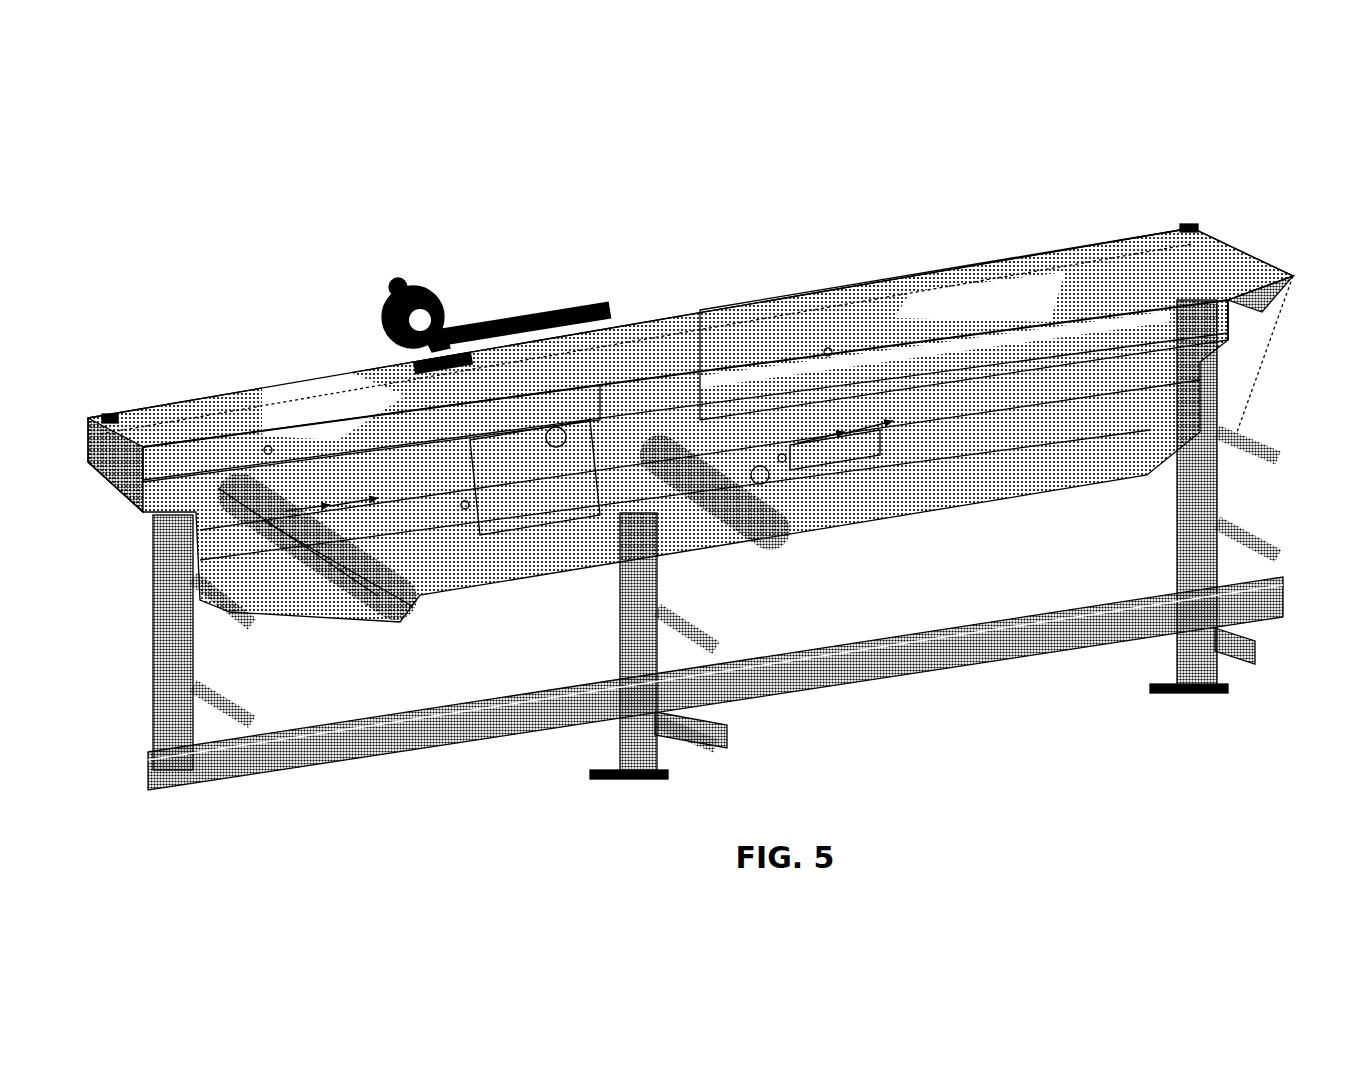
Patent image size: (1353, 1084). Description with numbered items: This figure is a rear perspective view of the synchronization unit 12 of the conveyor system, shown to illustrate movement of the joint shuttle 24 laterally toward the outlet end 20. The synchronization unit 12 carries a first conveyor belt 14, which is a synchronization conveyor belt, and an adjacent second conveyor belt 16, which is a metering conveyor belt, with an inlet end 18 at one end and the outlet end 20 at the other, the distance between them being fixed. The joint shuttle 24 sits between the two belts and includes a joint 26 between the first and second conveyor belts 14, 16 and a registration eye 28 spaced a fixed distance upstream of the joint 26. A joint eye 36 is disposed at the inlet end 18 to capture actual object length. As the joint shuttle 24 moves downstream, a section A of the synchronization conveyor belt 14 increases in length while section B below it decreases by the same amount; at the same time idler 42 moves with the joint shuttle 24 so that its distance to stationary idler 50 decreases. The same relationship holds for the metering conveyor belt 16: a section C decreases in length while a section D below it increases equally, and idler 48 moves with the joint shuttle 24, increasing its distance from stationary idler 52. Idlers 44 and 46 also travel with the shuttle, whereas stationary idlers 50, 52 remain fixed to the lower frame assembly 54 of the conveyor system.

The synchronization unit 12 is at (703, 232).
The first conveyor belt 14 is at (229, 432).
The second conveyor belt 16 is at (1106, 285).
The inlet end 18 is at (140, 452).
The outlet end 20 is at (1288, 276).
The joint shuttle 24 is at (463, 284).
The joint 26 is at (463, 327).
The registration eye 28 is at (420, 363).
The joint eye 36 is at (106, 416).
The idler 42 is at (283, 523).
The idler 44 is at (514, 468).
The idler 46 is at (555, 450).
The idler 48 is at (800, 448).
The stationary idler 50 is at (690, 497).
The stationary idler 52 is at (760, 484).
The lower frame assembly 54 is at (1214, 510).
The section A is at (266, 447).
The section B is at (465, 505).
The section C is at (828, 352).
The section D is at (782, 458).